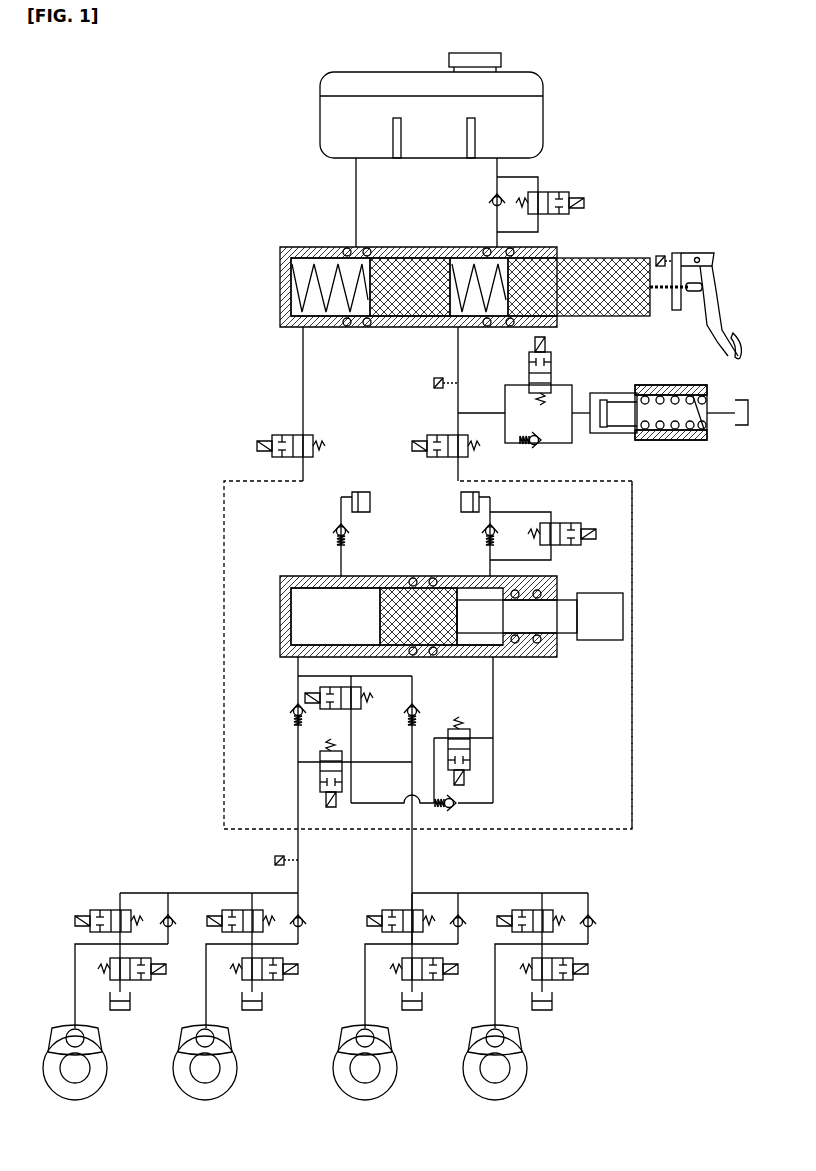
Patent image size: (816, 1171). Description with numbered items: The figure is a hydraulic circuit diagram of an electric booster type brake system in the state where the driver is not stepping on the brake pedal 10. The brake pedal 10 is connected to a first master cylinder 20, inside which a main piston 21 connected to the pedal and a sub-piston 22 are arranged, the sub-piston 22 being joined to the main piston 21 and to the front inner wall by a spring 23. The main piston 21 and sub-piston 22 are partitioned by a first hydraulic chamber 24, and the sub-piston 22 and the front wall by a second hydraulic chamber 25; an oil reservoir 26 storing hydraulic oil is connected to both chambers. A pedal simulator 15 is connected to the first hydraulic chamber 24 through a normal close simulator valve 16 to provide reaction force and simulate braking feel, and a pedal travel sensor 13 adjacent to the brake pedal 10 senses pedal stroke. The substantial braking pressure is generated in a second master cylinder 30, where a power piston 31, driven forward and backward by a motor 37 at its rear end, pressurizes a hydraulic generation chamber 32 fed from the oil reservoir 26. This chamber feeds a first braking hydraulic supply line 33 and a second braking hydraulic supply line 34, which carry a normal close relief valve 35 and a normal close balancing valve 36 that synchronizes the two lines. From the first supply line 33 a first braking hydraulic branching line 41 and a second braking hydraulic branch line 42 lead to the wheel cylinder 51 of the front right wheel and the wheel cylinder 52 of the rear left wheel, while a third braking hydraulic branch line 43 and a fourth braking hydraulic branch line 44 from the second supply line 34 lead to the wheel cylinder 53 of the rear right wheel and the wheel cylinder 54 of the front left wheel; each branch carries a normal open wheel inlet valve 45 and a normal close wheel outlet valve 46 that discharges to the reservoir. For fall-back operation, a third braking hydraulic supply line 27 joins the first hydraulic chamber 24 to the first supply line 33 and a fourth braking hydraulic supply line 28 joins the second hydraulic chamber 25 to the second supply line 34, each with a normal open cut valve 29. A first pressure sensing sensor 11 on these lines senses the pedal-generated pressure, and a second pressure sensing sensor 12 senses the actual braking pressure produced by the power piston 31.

The brake pedal 10 is at (720, 306).
The first pressure sensing sensor 11 is at (434, 382).
The second pressure sensing sensor 12 is at (275, 860).
The pedal travel sensor 13 is at (660, 254).
The pedal simulator 15 is at (662, 385).
The simulator valve 16 is at (560, 357).
The first master cylinder 20 is at (431, 283).
The main piston 21 is at (565, 273).
The sub-piston 22 is at (420, 262).
The spring 23 is at (335, 262).
The first hydraulic chamber 24 is at (465, 330).
The second hydraulic chamber 25 is at (342, 330).
The oil reservoir 26 is at (545, 108).
The third braking hydraulic supply line 27 is at (632, 520).
The fourth braking hydraulic supply line 28 is at (224, 492).
The cut valve 29 is at (272, 440).
The second master cylinder 30 is at (432, 605).
The power piston 31 is at (400, 596).
The hydraulic generation chamber 32 is at (298, 626).
The first braking hydraulic supply line 33 is at (412, 857).
The second braking hydraulic supply line 34 is at (298, 812).
The relief valve 35 is at (358, 710).
The balancing valve 36 is at (318, 762).
The motor 37 is at (600, 640).
The first braking hydraulic branching line 41 is at (486, 893).
The second braking hydraulic branch line 42 is at (365, 944).
The third braking hydraulic branch line 43 is at (280, 946).
The fourth braking hydraulic branch line 44 is at (130, 893).
The wheel inlet valve 45 is at (88, 910).
The wheel outlet valve 46 is at (142, 982).
The wheel cylinder of front right wheel 51 is at (494, 1030).
The wheel cylinder of rear left wheel 52 is at (365, 1030).
The wheel cylinder of rear right wheel 53 is at (200, 1030).
The wheel cylinder of front left wheel 54 is at (70, 1030).